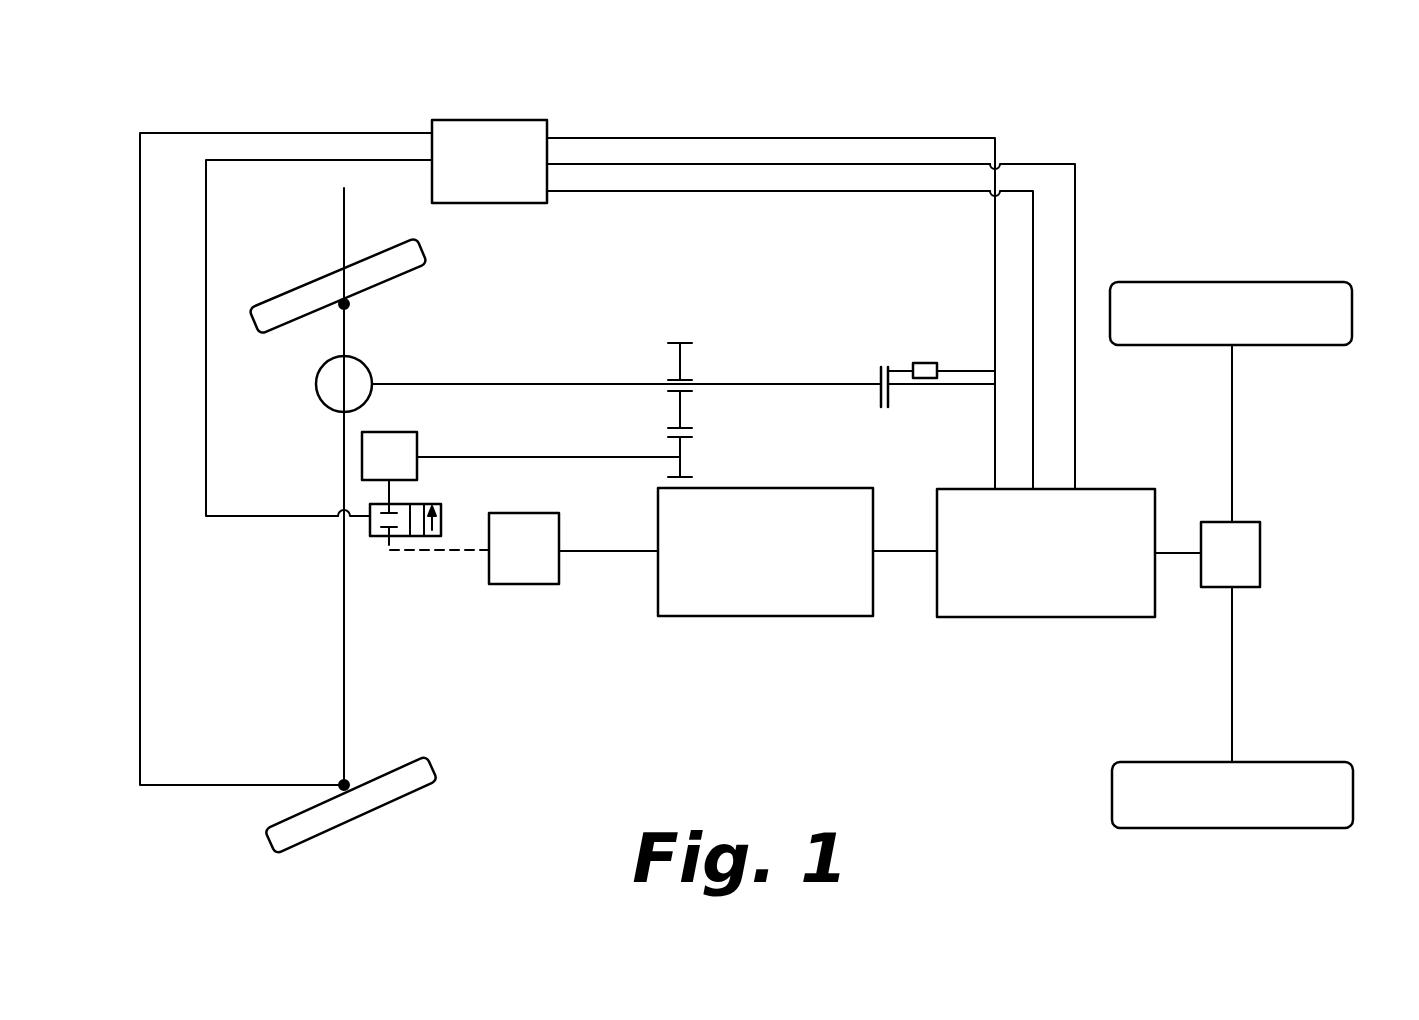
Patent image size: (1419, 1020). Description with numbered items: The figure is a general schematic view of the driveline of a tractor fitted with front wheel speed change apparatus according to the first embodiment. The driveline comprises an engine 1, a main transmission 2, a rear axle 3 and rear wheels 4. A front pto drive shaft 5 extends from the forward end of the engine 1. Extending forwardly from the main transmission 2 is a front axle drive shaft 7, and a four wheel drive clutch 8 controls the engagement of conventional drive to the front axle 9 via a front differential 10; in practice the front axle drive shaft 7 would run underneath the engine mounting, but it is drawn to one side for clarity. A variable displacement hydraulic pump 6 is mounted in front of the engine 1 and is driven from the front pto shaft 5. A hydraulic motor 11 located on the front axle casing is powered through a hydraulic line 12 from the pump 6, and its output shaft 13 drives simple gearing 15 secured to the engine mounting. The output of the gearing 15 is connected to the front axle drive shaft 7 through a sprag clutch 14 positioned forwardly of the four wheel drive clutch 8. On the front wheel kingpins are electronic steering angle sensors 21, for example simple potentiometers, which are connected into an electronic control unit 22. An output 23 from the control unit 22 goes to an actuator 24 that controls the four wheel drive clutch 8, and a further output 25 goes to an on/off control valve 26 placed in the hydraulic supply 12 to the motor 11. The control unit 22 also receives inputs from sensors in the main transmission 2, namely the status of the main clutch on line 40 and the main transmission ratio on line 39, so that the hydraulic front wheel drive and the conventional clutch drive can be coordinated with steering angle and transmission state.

The engine 1 is at (771, 616).
The main transmission 2 is at (1037, 612).
The rear axle 3 is at (1265, 521).
The rear wheels 4 is at (1345, 320).
The front pto drive shaft 5 is at (592, 552).
The variable displacement hydraulic pump 6 is at (530, 584).
The front axle drive shaft 7 is at (492, 384).
The four wheel drive clutch 8 is at (885, 367).
The front axle 9 is at (344, 578).
The front differential 10 is at (320, 392).
The hydraulic motor 11 is at (398, 432).
The hydraulic line 12 is at (413, 550).
The output shaft 13 is at (530, 457).
The sprag clutch 14 is at (683, 380).
The gearing 15 is at (740, 384).
The steering angle sensors 21 is at (349, 304).
The electronic control unit 22 is at (520, 200).
The output 23 is at (995, 153).
The actuator 24 is at (930, 363).
The output 25 is at (225, 516).
The on/off control valve 26 is at (445, 512).
The line 39 is at (1075, 198).
The line 40 is at (1035, 280).